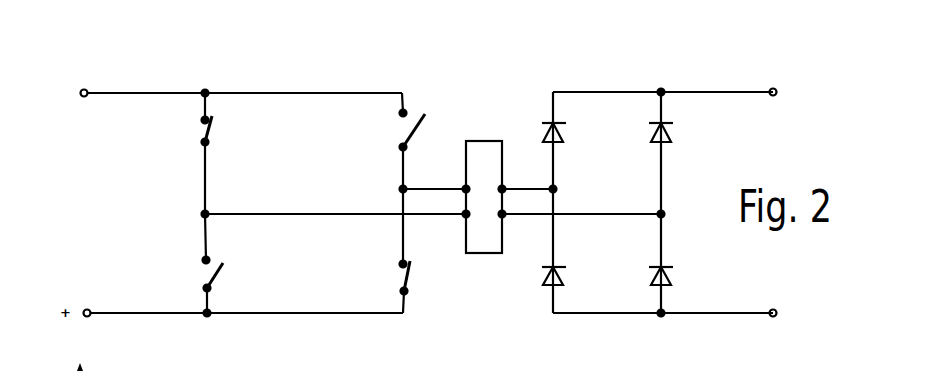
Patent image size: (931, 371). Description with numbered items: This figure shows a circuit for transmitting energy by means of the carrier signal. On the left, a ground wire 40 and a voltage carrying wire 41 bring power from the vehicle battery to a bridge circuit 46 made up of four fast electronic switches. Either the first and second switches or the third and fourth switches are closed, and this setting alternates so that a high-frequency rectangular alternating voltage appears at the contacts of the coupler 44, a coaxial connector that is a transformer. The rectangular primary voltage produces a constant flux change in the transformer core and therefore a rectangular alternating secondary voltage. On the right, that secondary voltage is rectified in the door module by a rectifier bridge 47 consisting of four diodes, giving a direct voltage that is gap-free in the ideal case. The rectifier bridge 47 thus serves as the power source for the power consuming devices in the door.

The ground wire 40 is at (127, 312).
The voltage carrying wire 41 is at (140, 97).
The coupler 44 is at (485, 247).
The bridge circuit 46 is at (299, 93).
The rectifier bridge 47 is at (624, 92).